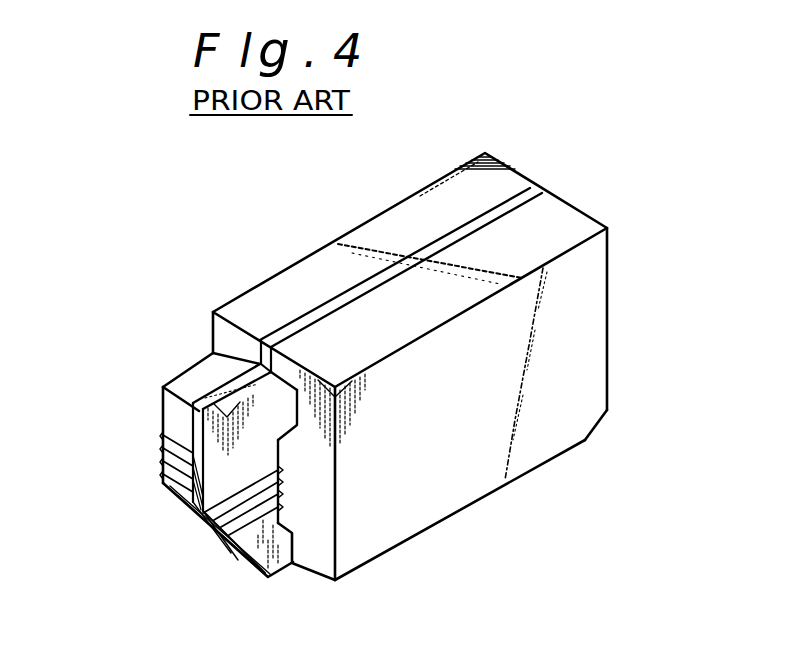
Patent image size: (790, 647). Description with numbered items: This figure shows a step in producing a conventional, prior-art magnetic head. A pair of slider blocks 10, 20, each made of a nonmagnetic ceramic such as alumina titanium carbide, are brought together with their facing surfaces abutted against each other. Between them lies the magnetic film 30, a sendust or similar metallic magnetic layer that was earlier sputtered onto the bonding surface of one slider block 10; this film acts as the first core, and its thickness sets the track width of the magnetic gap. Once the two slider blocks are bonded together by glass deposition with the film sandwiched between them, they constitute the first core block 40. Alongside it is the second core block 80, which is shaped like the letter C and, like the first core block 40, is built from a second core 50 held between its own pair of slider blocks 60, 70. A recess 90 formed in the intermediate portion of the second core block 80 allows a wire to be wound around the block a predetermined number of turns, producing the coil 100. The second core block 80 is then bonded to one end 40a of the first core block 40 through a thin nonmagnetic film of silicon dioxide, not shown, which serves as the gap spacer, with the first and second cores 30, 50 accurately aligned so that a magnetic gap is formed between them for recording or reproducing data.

The slider block 10 is at (335, 242).
The slider block 20 is at (609, 283).
The magnetic film 30 is at (530, 190).
The first core block 40 is at (620, 427).
The end of first core block 40a is at (318, 485).
The second core 50 is at (216, 380).
The slider block 60 is at (178, 385).
The slider block 70 is at (283, 423).
The second core block 80 is at (164, 500).
The recess 90 is at (296, 514).
The coil 100 is at (160, 448).